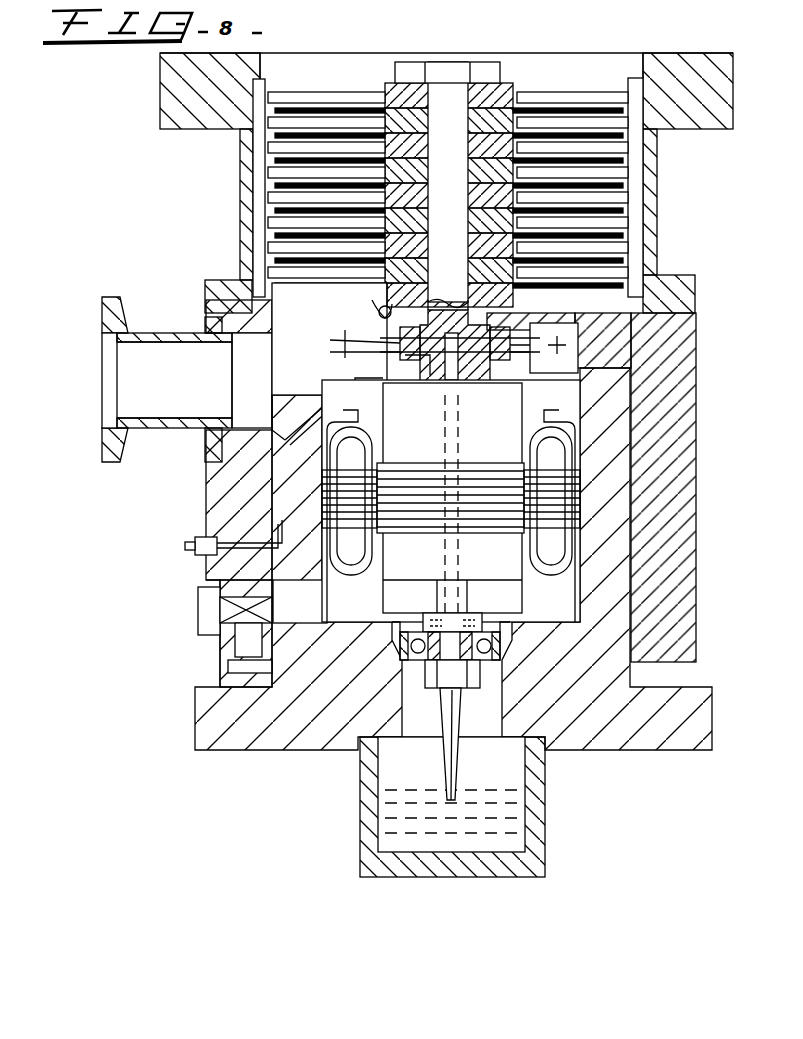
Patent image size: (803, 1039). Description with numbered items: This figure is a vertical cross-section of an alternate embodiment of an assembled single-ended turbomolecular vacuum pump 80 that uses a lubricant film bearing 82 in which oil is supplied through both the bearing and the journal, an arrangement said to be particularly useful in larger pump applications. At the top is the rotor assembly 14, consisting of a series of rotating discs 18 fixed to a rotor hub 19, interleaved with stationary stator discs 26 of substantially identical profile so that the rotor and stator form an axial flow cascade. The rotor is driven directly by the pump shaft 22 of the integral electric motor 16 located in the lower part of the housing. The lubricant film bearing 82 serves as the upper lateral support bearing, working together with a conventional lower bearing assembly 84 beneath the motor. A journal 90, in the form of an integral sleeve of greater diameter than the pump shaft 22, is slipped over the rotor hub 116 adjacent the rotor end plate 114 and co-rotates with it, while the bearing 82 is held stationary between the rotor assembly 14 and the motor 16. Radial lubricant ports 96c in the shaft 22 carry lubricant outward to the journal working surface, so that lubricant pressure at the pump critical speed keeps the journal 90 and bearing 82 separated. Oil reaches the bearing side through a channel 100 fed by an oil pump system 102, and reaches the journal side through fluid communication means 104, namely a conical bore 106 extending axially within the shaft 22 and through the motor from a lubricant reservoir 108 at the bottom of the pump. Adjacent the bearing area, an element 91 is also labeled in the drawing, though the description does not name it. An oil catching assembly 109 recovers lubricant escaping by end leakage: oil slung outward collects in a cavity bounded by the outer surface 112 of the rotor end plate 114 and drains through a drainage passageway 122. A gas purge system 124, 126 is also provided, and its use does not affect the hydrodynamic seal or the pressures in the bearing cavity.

The rotor assembly 14 is at (560, 84).
The pump shaft 22 is at (461, 156).
The stator discs 26 is at (610, 240).
The rotating discs 18 is at (618, 256).
The radial lubricant ports 96c is at (470, 334).
The lubricant film bearing 82 is at (556, 340).
The oil catching assembly 109 is at (363, 312).
The outer surface 112 is at (386, 306).
The channel 100 is at (398, 343).
The stud 91 is at (356, 347).
The drainage passageway 122 is at (410, 372).
The rotor hub 116 is at (440, 352).
The rotor end plate 114 is at (430, 330).
The journal 90 is at (458, 358).
The conical bore 106 is at (440, 440).
The rotor hub 19 is at (558, 346).
The oil pump system 102 is at (520, 350).
The gas purge system 124 is at (288, 470).
The vacuum pump 80 is at (198, 505).
The gas purge system 126 is at (195, 546).
The electric motor 16 is at (426, 562).
The lower bearing assembly 84 is at (400, 648).
The fluid communication means 104 is at (458, 728).
The lubricant reservoir 108 is at (420, 846).